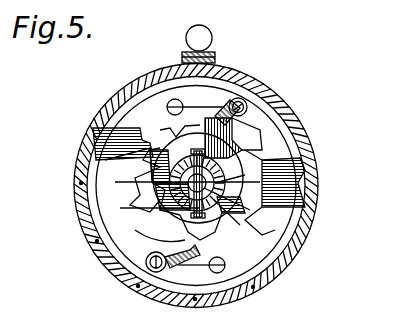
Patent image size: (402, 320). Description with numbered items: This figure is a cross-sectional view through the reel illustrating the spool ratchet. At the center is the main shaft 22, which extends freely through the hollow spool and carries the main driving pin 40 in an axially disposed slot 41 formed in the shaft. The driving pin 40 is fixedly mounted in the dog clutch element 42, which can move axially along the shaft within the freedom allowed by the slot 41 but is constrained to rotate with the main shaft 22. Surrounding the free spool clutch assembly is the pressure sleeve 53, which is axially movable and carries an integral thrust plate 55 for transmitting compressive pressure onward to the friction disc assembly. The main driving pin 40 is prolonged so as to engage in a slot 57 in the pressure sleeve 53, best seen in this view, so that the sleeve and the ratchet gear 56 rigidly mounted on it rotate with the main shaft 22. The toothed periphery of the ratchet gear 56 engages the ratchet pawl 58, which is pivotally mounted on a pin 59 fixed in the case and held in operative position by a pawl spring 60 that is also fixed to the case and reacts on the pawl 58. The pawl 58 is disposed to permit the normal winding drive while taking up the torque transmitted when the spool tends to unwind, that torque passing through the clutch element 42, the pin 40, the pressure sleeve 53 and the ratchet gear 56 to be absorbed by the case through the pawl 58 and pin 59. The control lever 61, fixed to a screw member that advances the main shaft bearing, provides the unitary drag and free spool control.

The main shaft 22 is at (226, 188).
The main driving pin 40 is at (150, 182).
The slot 41 is at (214, 200).
The dog clutch element 42 is at (120, 208).
The pressure sleeve 53 is at (90, 136).
The thrust plate 55 is at (256, 160).
The ratchet gear 56 is at (258, 205).
The slot 57 is at (162, 130).
The ratchet pawl 58 is at (219, 107).
The pin 59 is at (250, 101).
The pawl spring 60 is at (197, 102).
The lever 61 is at (185, 52).